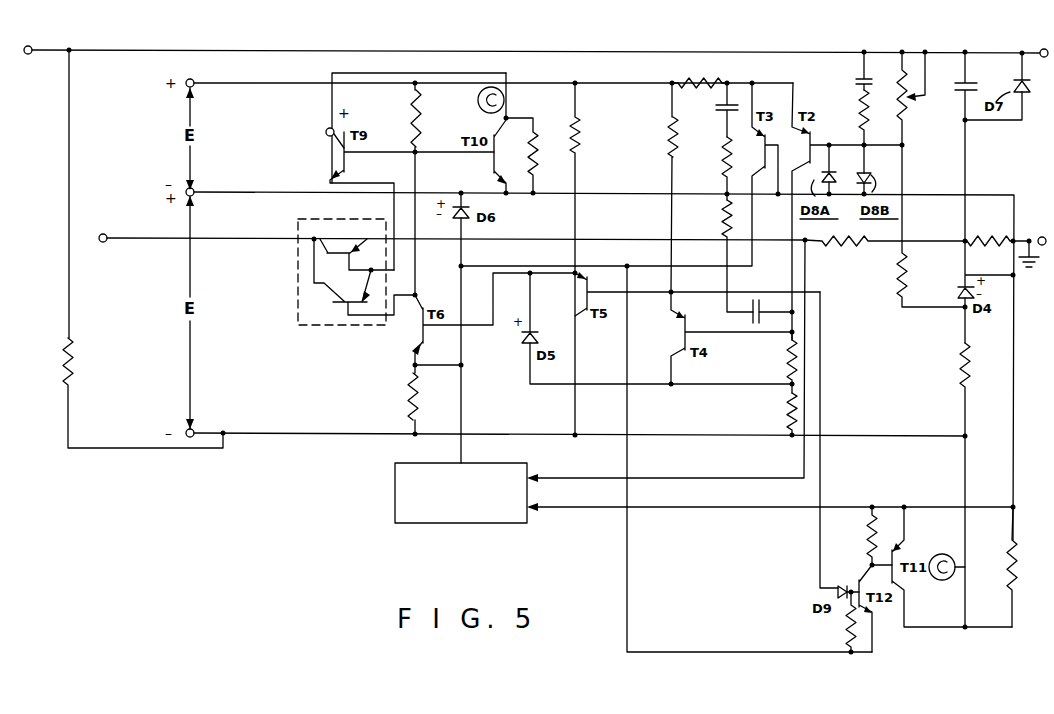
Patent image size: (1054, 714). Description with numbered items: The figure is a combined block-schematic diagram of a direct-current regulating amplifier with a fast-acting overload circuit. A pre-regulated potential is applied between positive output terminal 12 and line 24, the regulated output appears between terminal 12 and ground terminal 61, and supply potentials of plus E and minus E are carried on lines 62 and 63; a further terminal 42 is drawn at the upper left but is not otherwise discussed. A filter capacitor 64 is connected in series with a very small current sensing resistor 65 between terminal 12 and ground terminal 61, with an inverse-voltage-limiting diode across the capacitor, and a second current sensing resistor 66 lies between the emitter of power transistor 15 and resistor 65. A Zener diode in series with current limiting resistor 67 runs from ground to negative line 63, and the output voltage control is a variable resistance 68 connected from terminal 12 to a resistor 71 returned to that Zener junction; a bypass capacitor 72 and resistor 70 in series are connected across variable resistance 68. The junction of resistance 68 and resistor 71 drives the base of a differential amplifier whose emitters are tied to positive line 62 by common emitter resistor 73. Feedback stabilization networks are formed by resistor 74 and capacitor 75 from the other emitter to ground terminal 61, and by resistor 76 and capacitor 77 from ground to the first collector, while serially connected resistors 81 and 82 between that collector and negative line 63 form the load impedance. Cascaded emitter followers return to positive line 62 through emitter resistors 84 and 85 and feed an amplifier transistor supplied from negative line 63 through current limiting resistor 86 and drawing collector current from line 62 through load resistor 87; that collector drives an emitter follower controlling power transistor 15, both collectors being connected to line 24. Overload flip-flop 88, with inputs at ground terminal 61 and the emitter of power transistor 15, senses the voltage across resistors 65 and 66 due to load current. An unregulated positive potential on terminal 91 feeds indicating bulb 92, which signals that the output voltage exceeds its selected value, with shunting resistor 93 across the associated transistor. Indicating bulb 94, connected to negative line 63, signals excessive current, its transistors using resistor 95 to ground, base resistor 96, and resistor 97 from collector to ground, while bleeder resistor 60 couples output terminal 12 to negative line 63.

The positive output terminal 12 is at (1032, 51).
The power transistor 15 is at (333, 327).
The line 24 is at (103, 242).
The supply terminal 42 is at (28, 54).
The bleeder resistor 60 is at (75, 378).
The ground terminal 61 is at (262, 185).
The positive voltage supply line 62 is at (283, 84).
The negative voltage supply line 63 is at (275, 436).
The filter capacitor 64 is at (955, 86).
The current sensing resistor 65 is at (1003, 218).
The second current sensing resistor 66 is at (860, 246).
The current limiting resistor 67 is at (958, 360).
The variable resistance 68 is at (904, 112).
The resistor 70 is at (851, 117).
The resistor 71 is at (897, 288).
The bypass capacitor 72 is at (853, 70).
The common emitter resistor 73 is at (706, 80).
The resistor 74 is at (710, 168).
The capacitor 75 is at (716, 108).
The resistor 76 is at (720, 256).
The capacitor 77 is at (758, 318).
The resistor 81 is at (786, 358).
The resistor 82 is at (786, 410).
The emitter resistor 84 is at (668, 132).
The emitter resistor 85 is at (580, 142).
The current limiting resistor 86 is at (405, 396).
The load resistor 87 is at (418, 118).
The overload flip-flop 88 is at (500, 523).
The terminal 91 is at (326, 134).
The indicating bulb 92 is at (479, 104).
The shunting resistor 93 is at (540, 156).
The indicating bulb 94 is at (950, 536).
The resistor 95 is at (868, 527).
The base resistor 96 is at (845, 623).
The resistor 97 is at (1010, 575).